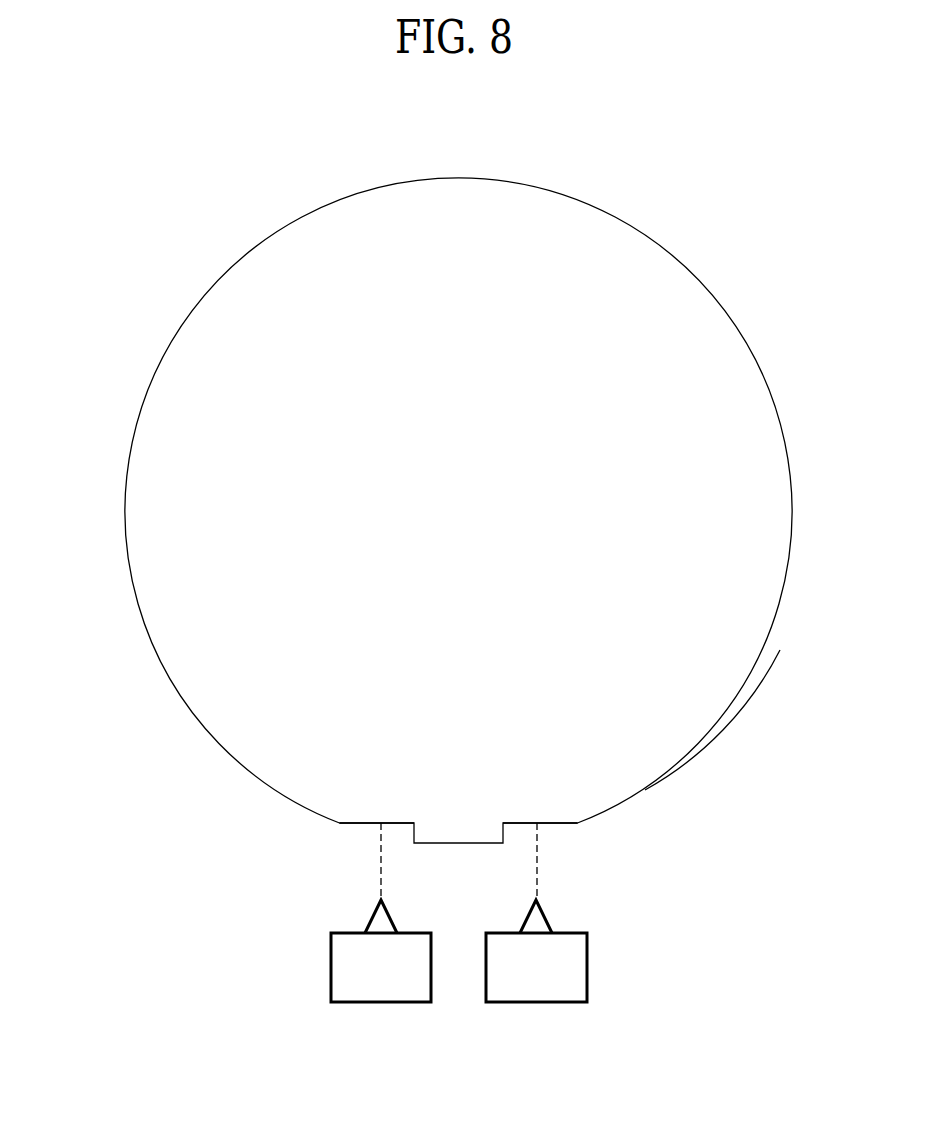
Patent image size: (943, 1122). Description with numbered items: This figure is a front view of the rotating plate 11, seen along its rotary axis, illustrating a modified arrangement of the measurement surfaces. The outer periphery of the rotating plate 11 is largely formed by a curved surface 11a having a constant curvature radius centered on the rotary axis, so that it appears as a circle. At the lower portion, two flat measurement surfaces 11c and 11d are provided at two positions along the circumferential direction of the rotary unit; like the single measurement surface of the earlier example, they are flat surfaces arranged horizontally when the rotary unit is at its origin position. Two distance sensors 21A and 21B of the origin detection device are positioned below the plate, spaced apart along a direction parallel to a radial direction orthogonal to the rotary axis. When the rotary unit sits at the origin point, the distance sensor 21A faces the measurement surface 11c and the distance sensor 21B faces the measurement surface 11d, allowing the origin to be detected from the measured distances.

The rotating plate 11 is at (127, 502).
The curved surface 11a is at (715, 724).
The measurement surface 11c is at (359, 823).
The measurement surface 11d is at (557, 823).
The distance sensor 21A is at (376, 1003).
The distance sensor 21B is at (532, 1003).